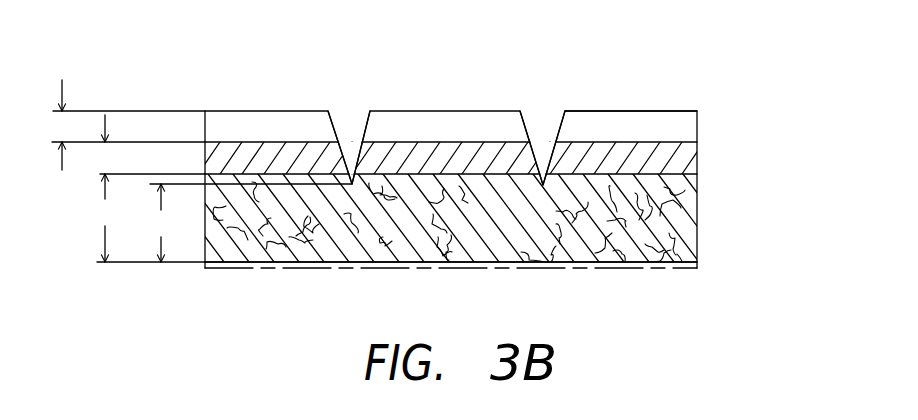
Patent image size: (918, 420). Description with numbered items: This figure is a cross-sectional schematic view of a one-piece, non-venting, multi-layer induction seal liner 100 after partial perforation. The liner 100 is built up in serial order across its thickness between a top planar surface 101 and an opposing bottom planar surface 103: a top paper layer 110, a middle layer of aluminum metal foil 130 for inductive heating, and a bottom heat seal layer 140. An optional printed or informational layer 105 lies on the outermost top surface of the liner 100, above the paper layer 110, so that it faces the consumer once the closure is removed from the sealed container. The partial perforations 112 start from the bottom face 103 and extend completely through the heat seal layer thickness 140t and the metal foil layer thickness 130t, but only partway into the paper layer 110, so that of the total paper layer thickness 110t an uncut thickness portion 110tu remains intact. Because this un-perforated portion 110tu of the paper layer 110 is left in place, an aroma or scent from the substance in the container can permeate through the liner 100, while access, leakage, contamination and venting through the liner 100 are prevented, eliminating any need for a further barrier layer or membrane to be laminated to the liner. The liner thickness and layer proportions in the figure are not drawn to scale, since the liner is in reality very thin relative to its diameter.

The liner 100 is at (607, 85).
The bottom planar surface 103 is at (670, 110).
The heat seal layer 140 is at (697, 128).
The metal foil layer 130 is at (697, 163).
The paper layer 110 is at (697, 222).
The notch / groove 112 is at (366, 128).
The top planar surface 101 is at (263, 263).
The printed or informational layer 105 is at (485, 269).
The heat seal layer thickness 140t is at (119, 125).
The metal foil layer thickness 130t is at (143, 144).
The paper layer thickness 110t is at (142, 218).
The uncut thickness portion 110tu is at (241, 223).